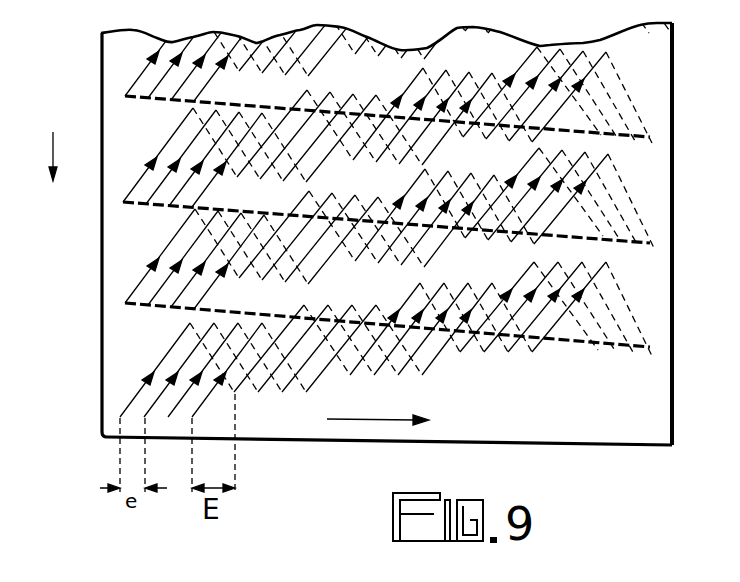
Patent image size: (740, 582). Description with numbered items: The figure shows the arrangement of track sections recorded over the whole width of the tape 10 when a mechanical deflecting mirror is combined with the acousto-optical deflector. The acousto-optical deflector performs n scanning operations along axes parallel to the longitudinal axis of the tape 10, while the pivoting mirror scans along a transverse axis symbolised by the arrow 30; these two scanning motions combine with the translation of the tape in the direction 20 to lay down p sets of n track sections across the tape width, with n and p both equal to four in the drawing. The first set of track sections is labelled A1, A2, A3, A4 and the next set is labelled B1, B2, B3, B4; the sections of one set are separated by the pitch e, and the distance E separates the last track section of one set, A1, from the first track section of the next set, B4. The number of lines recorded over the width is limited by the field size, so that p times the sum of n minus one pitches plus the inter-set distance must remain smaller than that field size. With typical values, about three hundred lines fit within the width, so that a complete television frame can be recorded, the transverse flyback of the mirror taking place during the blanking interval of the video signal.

The tape 10 is at (560, 438).
The direction of tape translation 20 is at (53, 136).
The transverse scanning axis 30 is at (384, 422).
The track of head A1 is at (193, 413).
The track of head A2 is at (168, 412).
The track of head A3 is at (134, 398).
The track of head A4 is at (145, 416).
The track of head B1 is at (262, 301).
The track of head B2 is at (215, 301).
The track of head B3 is at (200, 294).
The track of head B4 is at (190, 322).